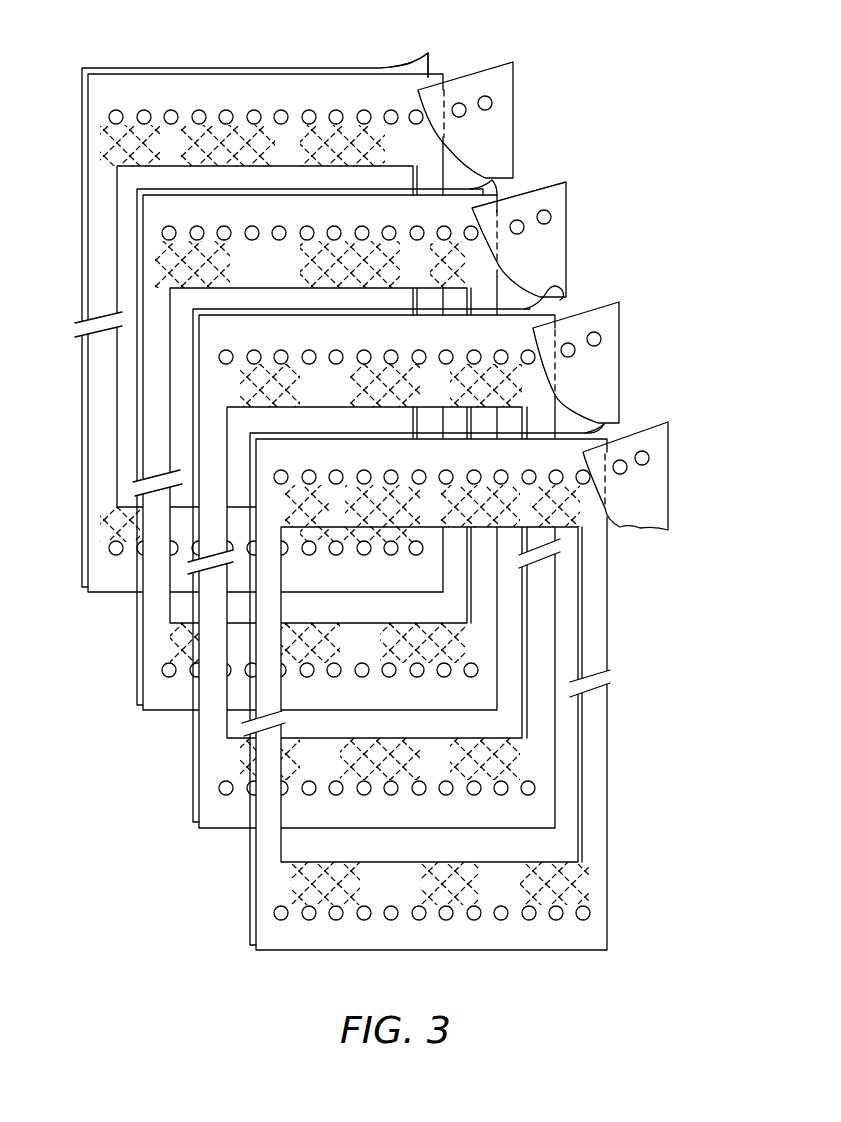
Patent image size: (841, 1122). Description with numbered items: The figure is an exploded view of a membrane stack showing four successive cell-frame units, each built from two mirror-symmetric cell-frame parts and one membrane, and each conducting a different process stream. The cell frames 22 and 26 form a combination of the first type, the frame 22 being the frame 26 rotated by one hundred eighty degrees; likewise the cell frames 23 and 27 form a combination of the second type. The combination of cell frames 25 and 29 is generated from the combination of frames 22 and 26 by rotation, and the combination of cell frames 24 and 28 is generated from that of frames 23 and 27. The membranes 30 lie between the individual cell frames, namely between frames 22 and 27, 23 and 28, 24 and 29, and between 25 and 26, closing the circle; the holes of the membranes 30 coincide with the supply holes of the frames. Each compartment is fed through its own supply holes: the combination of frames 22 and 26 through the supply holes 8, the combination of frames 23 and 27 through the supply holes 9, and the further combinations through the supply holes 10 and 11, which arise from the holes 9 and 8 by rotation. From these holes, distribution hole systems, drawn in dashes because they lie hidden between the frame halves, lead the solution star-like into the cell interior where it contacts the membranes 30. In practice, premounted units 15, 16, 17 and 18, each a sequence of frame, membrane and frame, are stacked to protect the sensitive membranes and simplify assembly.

The supply holes 8 is at (333, 116).
The supply holes 9 is at (415, 232).
The supply holes 10 is at (498, 352).
The supply holes 11 is at (576, 470).
The premounted unit 15 is at (497, 178).
The premounted unit 16 is at (553, 290).
The premounted unit 17 is at (598, 352).
The premounted unit 18 is at (670, 497).
The cell frame 22 is at (237, 322).
The cell frame 23 is at (264, 449).
The cell frame 24 is at (287, 563).
The cell frame 25 is at (310, 687).
The cell frame 26 is at (430, 62).
The cell frame 27 is at (478, 193).
The cell frame 28 is at (556, 290).
The cell frame 29 is at (592, 428).
The membranes 30 is at (493, 112).